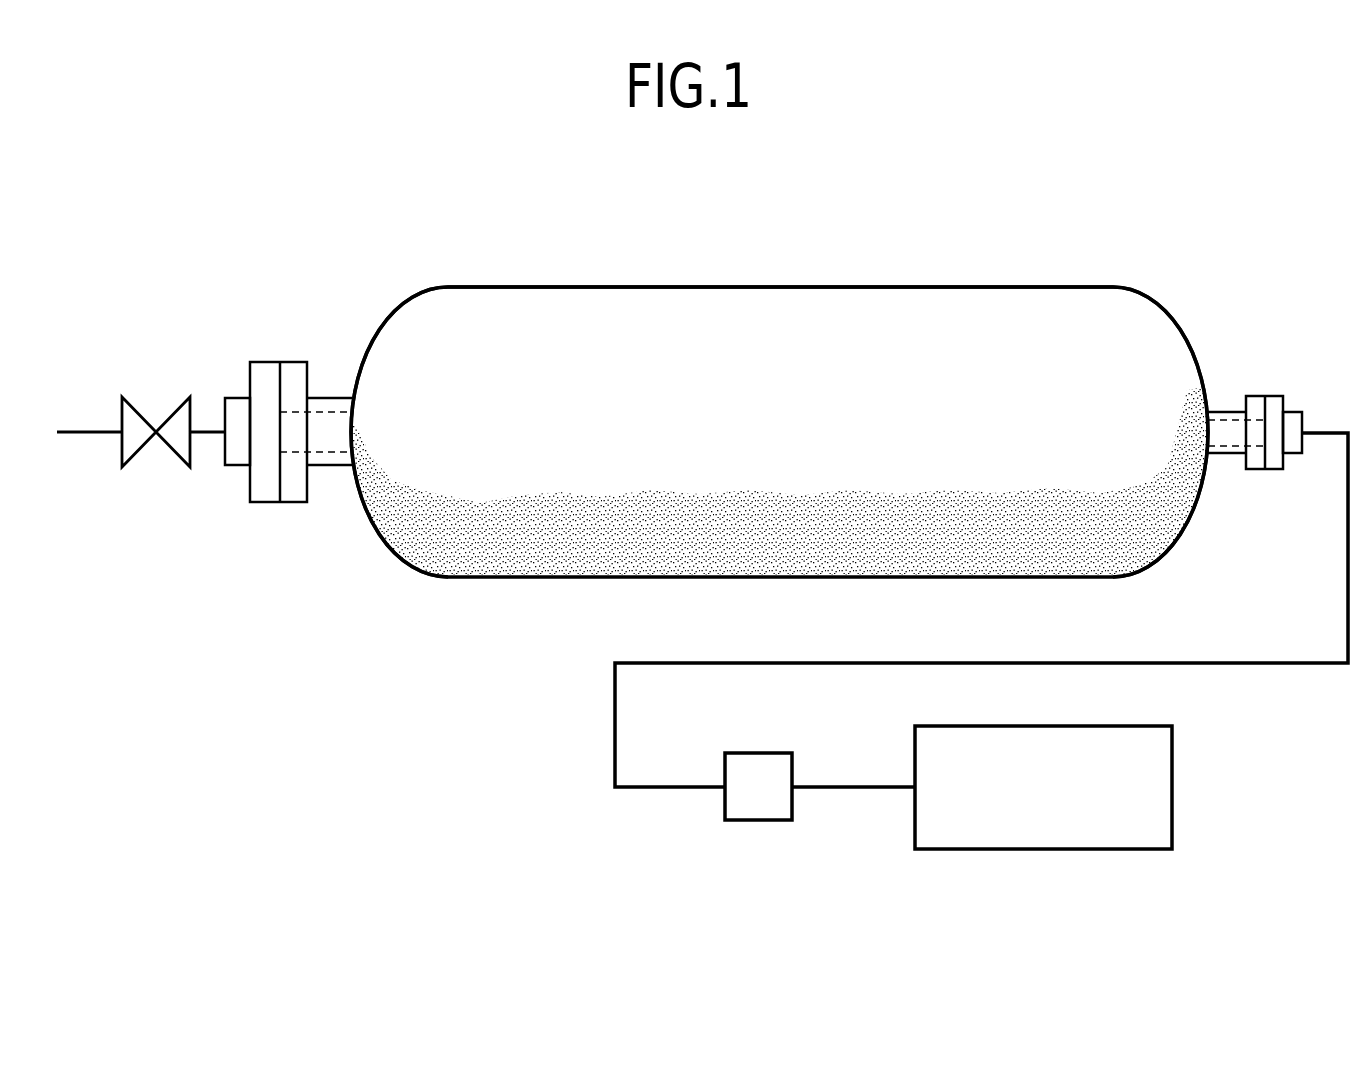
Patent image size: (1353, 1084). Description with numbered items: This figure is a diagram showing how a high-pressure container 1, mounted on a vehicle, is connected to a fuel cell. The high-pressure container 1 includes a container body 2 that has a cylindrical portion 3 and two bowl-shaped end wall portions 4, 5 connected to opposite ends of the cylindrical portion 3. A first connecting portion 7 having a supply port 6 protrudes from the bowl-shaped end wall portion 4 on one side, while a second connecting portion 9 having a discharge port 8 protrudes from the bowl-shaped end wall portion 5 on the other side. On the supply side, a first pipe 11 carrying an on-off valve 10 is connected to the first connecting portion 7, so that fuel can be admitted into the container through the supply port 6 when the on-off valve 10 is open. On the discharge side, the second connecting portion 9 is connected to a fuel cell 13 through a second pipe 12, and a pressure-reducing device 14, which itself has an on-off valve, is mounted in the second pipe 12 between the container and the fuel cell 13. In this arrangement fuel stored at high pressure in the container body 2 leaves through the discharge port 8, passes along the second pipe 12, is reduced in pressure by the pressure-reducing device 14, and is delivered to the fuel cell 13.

The high-pressure container 1 is at (916, 279).
The container body 2 is at (642, 285).
The cylindrical portion 3 is at (801, 287).
The bowl-shaped end wall portion 4 is at (373, 332).
The bowl-shaped end wall portion 5 is at (1175, 320).
The supply port 6 is at (352, 428).
The first connecting portion 7 is at (323, 467).
The discharge port 8 is at (1206, 432).
The second connecting portion 9 is at (1230, 455).
The on-off valve 10 is at (147, 408).
The first pipe 11 is at (207, 432).
The second pipe 12 is at (787, 665).
The fuel cell 13 is at (1033, 835).
The pressure-reducing device 14 is at (755, 812).